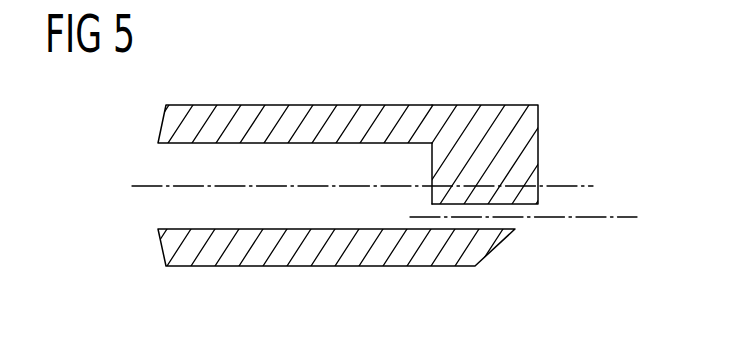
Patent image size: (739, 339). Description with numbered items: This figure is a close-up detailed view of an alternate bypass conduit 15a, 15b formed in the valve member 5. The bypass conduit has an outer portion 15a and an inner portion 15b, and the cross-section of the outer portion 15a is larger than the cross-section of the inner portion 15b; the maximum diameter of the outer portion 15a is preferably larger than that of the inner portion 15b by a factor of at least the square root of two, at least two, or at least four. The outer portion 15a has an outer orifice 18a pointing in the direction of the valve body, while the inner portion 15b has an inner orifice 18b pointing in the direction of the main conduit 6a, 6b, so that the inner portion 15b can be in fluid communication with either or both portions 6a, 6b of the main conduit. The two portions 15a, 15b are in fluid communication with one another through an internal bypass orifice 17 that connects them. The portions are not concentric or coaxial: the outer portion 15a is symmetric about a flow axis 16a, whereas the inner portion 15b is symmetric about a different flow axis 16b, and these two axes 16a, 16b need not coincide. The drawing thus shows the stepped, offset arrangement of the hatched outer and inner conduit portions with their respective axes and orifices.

The valve member 5 is at (553, 100).
The outer portion of bypass conduit 15a is at (313, 157).
The inner portion of bypass conduit 15b is at (462, 222).
The internal bypass orifice 17 is at (420, 202).
The axis 16a is at (582, 186).
The axis 16b is at (622, 217).
The outer orifice 18a is at (141, 158).
The inner orifice 18b is at (533, 229).
The main conduit portion 6a is at (377, 273).
The main conduit portion 6b is at (377, 273).